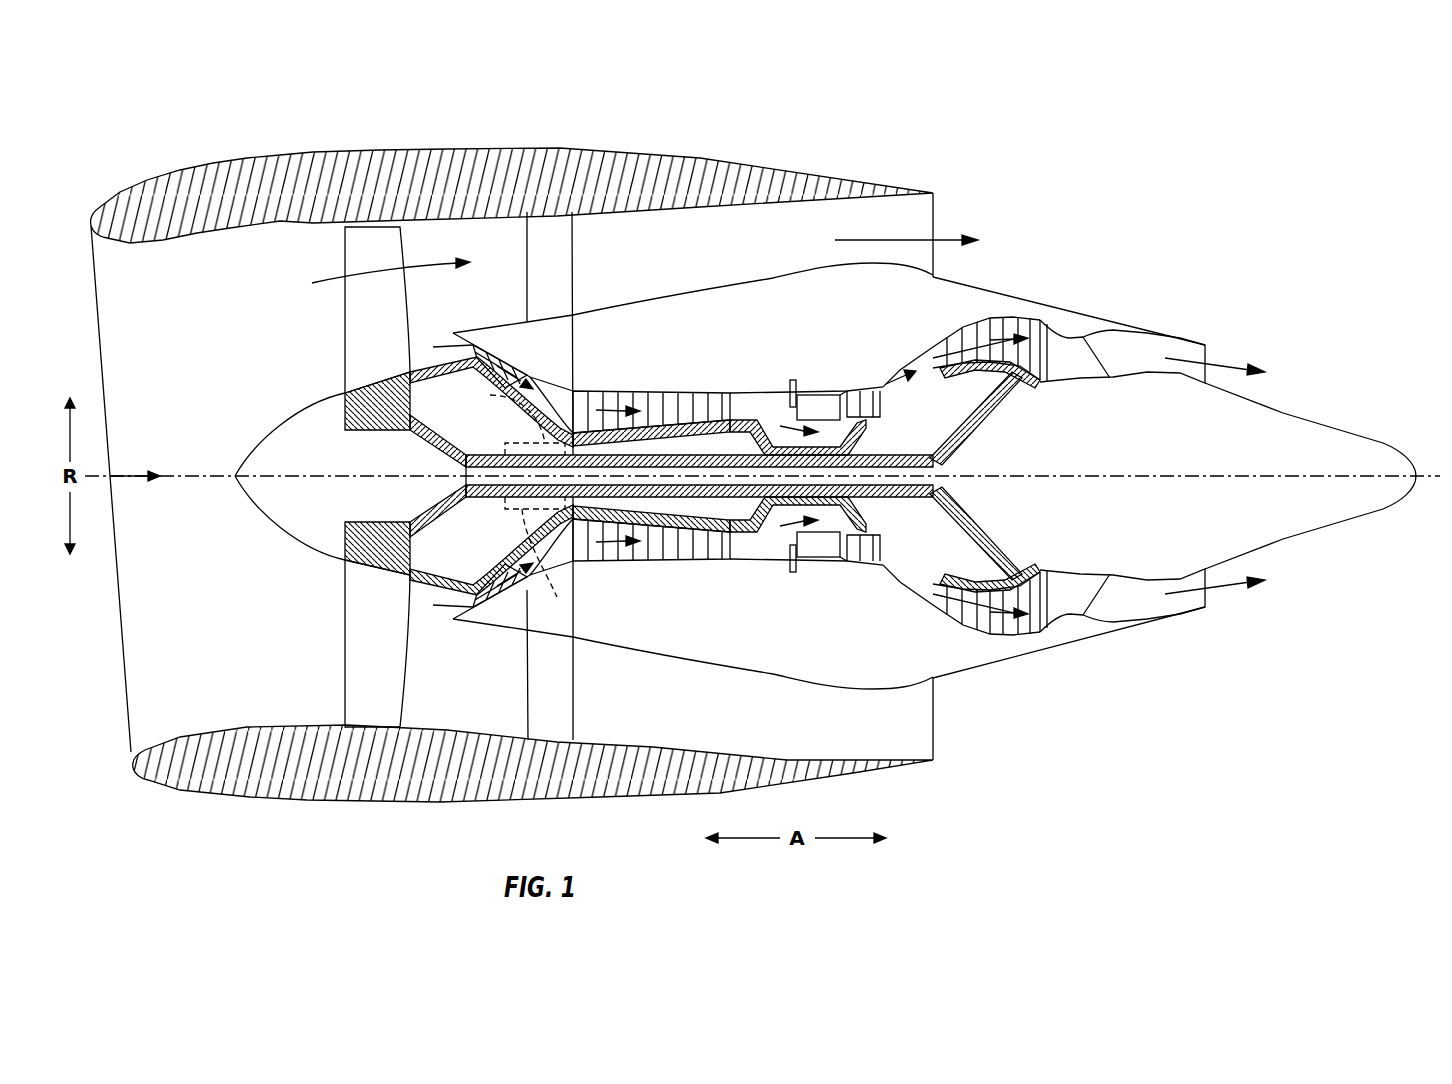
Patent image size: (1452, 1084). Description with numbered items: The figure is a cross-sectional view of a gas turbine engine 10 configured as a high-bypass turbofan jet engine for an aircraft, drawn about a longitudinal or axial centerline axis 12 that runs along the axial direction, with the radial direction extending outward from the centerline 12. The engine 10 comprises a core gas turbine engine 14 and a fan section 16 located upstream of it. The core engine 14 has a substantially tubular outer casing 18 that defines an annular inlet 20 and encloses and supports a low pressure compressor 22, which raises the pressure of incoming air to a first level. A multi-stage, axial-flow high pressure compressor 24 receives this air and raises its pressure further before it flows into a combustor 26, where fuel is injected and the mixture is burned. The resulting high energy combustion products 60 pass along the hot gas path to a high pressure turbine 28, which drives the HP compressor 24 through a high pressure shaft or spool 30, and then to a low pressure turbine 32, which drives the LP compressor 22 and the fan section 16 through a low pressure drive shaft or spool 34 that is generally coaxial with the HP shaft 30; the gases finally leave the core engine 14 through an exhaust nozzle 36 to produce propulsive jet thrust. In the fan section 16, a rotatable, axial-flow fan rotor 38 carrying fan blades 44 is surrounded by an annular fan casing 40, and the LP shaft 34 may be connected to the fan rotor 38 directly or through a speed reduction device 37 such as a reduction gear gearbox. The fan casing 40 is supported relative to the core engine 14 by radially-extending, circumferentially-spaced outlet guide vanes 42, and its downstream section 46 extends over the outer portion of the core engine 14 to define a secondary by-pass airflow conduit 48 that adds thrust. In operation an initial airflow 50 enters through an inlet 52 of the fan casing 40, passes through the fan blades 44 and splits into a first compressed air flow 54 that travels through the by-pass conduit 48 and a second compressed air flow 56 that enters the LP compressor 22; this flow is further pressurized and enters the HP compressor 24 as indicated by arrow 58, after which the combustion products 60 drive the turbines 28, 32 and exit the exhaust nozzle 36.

The gas turbine engine 10 is at (1111, 166).
The longitudinal or axial centerline axis 12 is at (1103, 472).
The core gas turbine engine 14 is at (745, 338).
The fan section 16 is at (392, 130).
The outer casing 18 is at (750, 672).
The annular inlet 20 is at (458, 604).
The low pressure compressor 22 is at (530, 560).
The high pressure compressor 24 is at (607, 548).
The combustor 26 is at (818, 562).
The high pressure turbine 28 is at (868, 562).
The high pressure shaft or spool 30 is at (845, 438).
The low pressure turbine 32 is at (1030, 640).
The low pressure drive shaft or spool 34 is at (522, 443).
The exhaust nozzle 36 is at (1207, 352).
The speed reduction device 37 is at (514, 504).
The fan rotor 38 is at (410, 432).
The fan casing 40 is at (440, 802).
The outlet guide vanes 42 is at (575, 236).
The fan blades 44 is at (345, 672).
The downstream section of the fan casing 46 is at (780, 174).
The by-pass airflow conduit 48 is at (725, 242).
The initial airflow 50 is at (122, 470).
The inlet of the fan casing 52 is at (126, 722).
The first compressed air flow 54 is at (352, 278).
The second compressed air flow 56 is at (455, 342).
The airflow entering the HP compressor 58 is at (604, 380).
The combustion products 60 is at (863, 382).